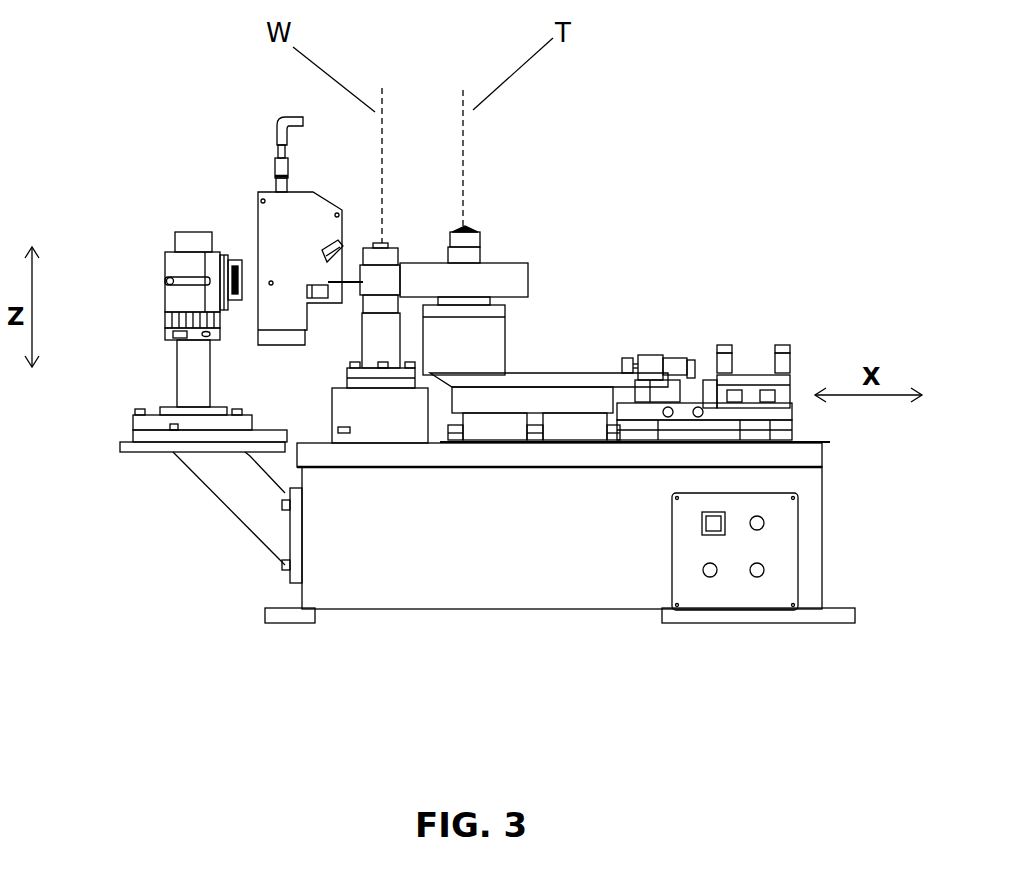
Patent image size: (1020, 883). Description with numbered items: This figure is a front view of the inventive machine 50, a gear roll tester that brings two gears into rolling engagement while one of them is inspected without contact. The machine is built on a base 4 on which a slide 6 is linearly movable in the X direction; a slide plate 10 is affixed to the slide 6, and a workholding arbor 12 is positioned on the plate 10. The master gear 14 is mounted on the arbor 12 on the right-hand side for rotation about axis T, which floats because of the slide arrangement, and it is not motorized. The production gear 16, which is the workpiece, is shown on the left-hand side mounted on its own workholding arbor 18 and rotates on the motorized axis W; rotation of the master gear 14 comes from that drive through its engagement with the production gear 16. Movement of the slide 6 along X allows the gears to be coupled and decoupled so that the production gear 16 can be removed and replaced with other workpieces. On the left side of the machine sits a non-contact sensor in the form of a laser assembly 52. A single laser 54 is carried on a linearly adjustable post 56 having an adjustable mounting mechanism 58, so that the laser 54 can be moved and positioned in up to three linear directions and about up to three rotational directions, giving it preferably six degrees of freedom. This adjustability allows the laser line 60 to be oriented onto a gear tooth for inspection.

The base 4 is at (500, 551).
The slide 6 is at (573, 392).
The slide plate 10 is at (545, 375).
The workholding arbor 12 is at (487, 340).
The master gear 14 is at (503, 280).
The production gear 16 is at (393, 280).
The workholding arbor 18 is at (383, 340).
The inventive machine 50 is at (752, 303).
The laser assembly 52 is at (243, 185).
The laser 54 is at (277, 232).
The linearly adjustable post 56 is at (190, 376).
The adjustable mounting mechanism 58 is at (173, 296).
The laser line 60 is at (348, 290).